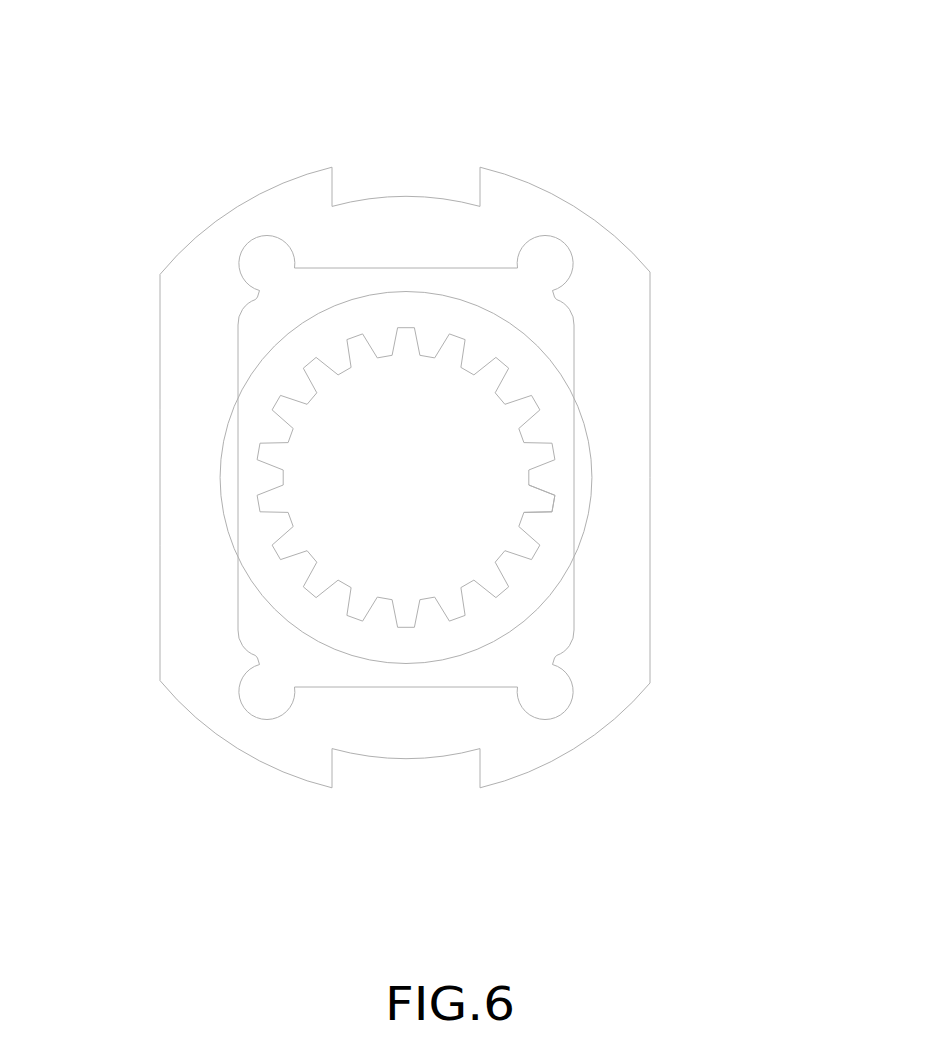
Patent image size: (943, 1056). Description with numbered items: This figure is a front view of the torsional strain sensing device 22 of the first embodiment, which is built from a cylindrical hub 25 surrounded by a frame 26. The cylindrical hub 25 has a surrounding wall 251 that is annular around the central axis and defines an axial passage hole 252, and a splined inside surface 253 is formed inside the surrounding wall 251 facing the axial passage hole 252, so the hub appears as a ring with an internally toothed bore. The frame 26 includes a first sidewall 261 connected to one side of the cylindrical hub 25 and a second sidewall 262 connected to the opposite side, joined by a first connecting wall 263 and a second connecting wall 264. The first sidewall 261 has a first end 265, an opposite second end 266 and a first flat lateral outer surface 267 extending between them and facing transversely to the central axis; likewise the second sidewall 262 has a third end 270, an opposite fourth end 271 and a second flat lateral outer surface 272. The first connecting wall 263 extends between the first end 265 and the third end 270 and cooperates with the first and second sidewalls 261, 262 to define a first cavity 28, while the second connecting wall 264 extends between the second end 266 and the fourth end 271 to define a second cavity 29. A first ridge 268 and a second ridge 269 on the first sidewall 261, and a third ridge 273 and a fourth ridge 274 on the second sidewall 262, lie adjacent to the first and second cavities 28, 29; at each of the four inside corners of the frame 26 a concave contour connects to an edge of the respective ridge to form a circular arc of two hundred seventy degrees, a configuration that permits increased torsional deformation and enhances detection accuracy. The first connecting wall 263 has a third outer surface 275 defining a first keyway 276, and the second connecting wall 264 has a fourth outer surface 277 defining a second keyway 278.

The torsional strain sensing device 22 is at (238, 205).
The cylindrical hub 25 is at (272, 378).
The frame 26 is at (315, 238).
The first cavity 28 is at (468, 282).
The second cavity 29 is at (415, 677).
The surrounding wall 251 is at (540, 372).
The axial passage hole 252 is at (438, 453).
The splined inside surface 253 is at (533, 482).
The first sidewall 261 is at (185, 517).
The second sidewall 262 is at (627, 589).
The first connecting wall 263 is at (412, 237).
The second connecting wall 264 is at (318, 717).
The first end 265 is at (175, 335).
The second end 266 is at (190, 657).
The first flat lateral outer surface 267 is at (160, 467).
The first ridge 268 is at (250, 297).
The second ridge 269 is at (247, 658).
The third end 270 is at (625, 280).
The fourth end 271 is at (628, 672).
The second flat lateral outer surface 272 is at (652, 488).
The third ridge 273 is at (558, 295).
The fourth ridge 274 is at (560, 658).
The third outer surface 275 is at (498, 172).
The first keyway 276 is at (362, 178).
The fourth outer surface 277 is at (500, 782).
The second keyway 278 is at (370, 773).